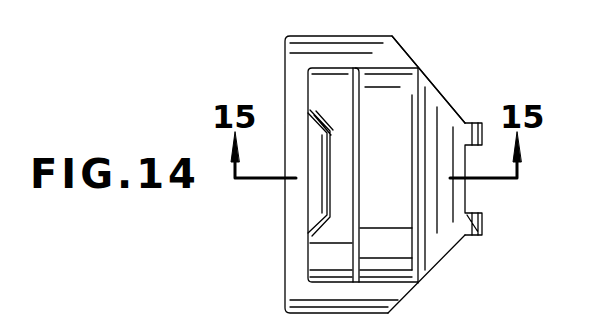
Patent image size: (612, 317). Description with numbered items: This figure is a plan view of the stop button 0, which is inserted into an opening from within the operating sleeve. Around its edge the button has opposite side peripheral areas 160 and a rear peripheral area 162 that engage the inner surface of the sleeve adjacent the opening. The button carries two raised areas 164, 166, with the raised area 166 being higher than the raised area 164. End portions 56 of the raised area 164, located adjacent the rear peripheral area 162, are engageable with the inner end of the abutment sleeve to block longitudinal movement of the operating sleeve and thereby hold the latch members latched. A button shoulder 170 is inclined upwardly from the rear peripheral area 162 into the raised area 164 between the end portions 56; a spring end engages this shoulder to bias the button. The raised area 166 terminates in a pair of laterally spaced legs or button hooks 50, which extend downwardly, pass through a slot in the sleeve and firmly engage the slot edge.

The opposite side peripheral areas 160 is at (330, 45).
The raised area 166 is at (397, 105).
The button hooks 50 is at (472, 123).
The raised area 164 is at (325, 85).
The end portions 56 is at (308, 103).
The button shoulder 170 is at (318, 197).
The rear peripheral area 162 is at (294, 222).
The stop button 0 is at (425, 50).